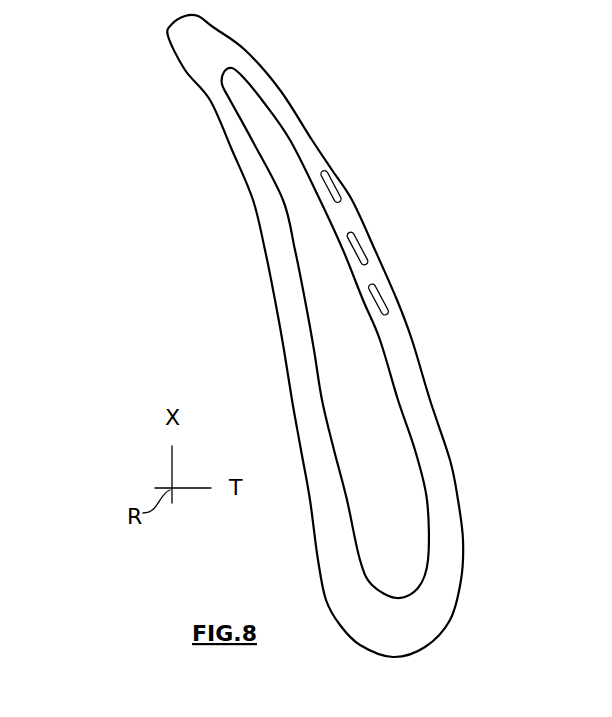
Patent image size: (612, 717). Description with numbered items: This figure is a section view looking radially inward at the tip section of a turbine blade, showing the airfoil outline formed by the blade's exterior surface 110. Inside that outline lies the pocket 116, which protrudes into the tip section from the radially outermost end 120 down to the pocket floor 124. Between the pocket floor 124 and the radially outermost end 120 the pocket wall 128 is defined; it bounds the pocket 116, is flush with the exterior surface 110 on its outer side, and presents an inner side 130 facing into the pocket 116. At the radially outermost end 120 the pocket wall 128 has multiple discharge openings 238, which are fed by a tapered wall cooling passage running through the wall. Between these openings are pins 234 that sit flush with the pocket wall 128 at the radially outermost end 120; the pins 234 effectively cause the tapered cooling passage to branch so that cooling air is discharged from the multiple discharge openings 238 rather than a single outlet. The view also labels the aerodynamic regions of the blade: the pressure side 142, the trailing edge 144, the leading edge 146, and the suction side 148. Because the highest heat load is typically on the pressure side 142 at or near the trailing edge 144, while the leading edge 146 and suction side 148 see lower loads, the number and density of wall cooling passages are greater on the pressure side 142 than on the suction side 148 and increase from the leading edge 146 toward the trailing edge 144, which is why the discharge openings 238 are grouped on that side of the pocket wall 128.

The exterior surface 110 is at (353, 336).
The pocket 116 is at (365, 333).
The radially outermost end 120 is at (194, 304).
The pocket floor 124 is at (368, 508).
The pocket wall 128 is at (413, 393).
The inner side 130 is at (411, 446).
The pressure side 142 is at (503, 274).
The trailing edge 144 is at (168, 33).
The leading edge 146 is at (403, 657).
The suction side 148 is at (145, 365).
The pins 234 is at (343, 218).
The discharge openings 238 is at (330, 182).